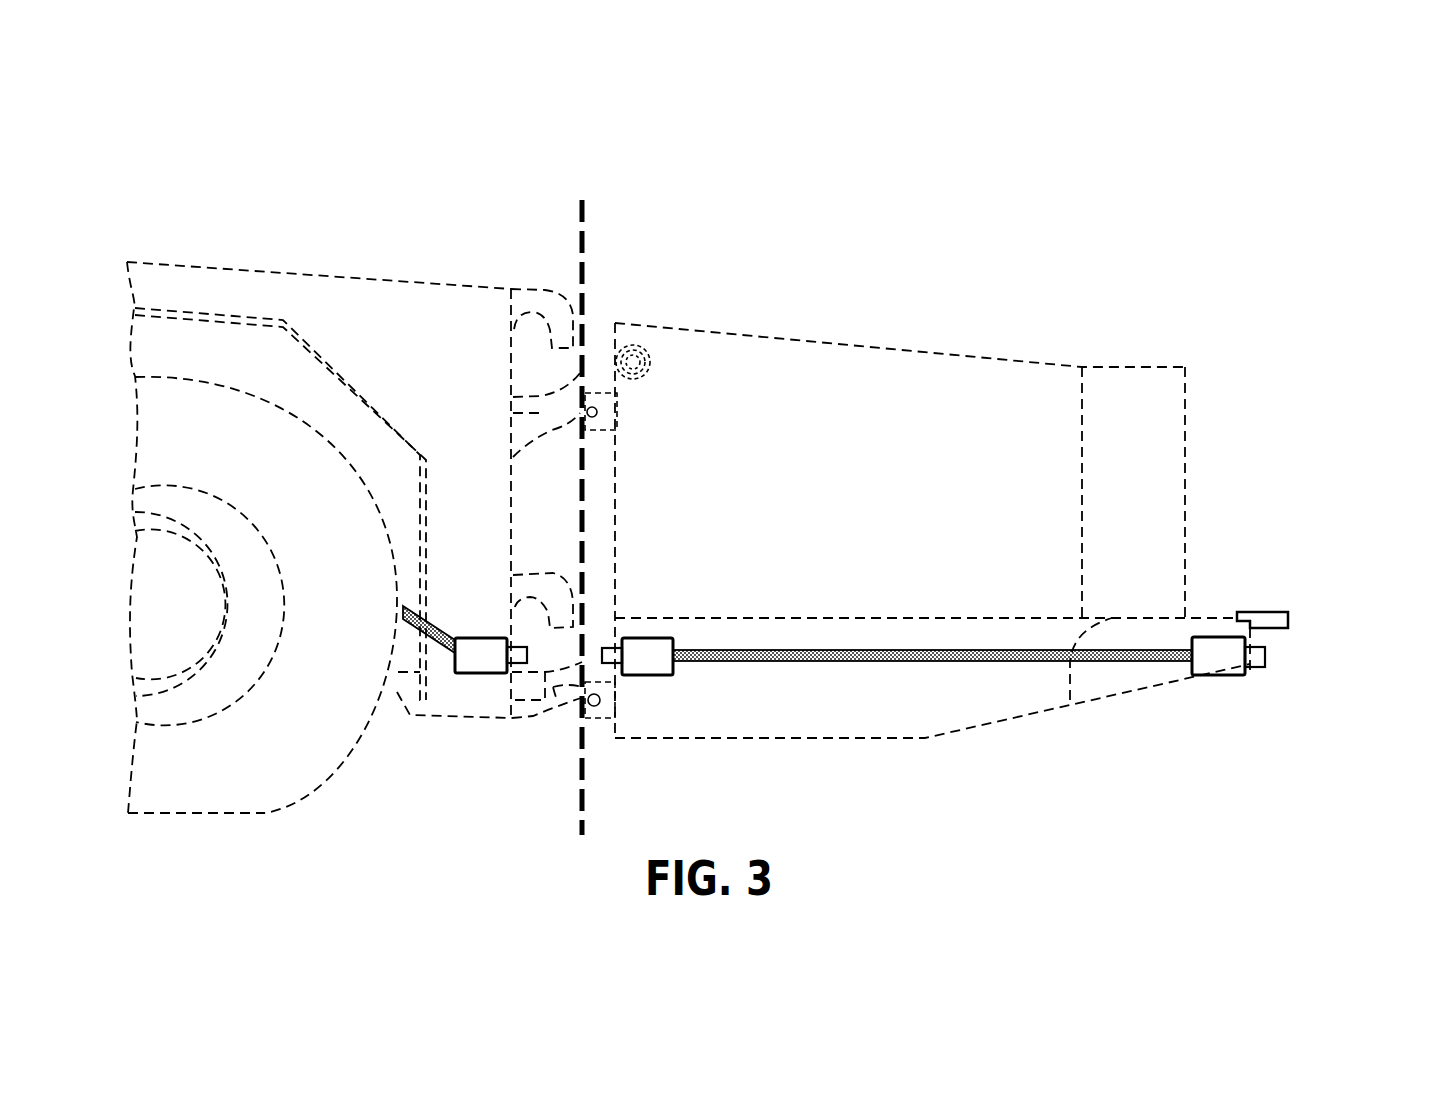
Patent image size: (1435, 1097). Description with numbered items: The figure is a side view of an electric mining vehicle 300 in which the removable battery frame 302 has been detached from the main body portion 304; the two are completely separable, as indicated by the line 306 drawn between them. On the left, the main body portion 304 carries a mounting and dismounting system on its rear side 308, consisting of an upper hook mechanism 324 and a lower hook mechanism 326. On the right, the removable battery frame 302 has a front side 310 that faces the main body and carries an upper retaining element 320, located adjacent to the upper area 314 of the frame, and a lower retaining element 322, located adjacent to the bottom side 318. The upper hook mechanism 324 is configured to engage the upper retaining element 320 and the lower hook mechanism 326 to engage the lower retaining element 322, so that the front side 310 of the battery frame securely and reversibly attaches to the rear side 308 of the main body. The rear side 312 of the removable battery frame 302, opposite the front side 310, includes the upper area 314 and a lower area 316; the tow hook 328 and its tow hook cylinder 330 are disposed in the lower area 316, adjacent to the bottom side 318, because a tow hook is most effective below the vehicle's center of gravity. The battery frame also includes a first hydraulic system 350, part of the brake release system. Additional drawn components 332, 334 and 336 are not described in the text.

The vehicle 300 is at (771, 468).
The removable battery frame 302 is at (1015, 526).
The main body portion 304 is at (319, 485).
The line 306 is at (600, 470).
The rear side of main body portion 308 is at (514, 453).
The front side 310 is at (658, 481).
The rear side of removable battery frame 312 is at (1212, 492).
The upper area 314 is at (1216, 443).
The lower area 316 is at (1332, 662).
The bottom side 318 is at (1107, 723).
The upper retaining element 320 is at (657, 411).
The lower retaining element 322 is at (620, 749).
The upper hook mechanism 324 is at (502, 335).
The lower hook mechanism 326 is at (547, 640).
The tow hook 328 is at (1273, 579).
The tow hook cylinder 330 is at (1228, 614).
The connecting rod 332 is at (932, 614).
The front actuator 334 is at (647, 615).
The cab-side actuator 336 is at (465, 614).
The first hydraulic system 350 is at (848, 541).